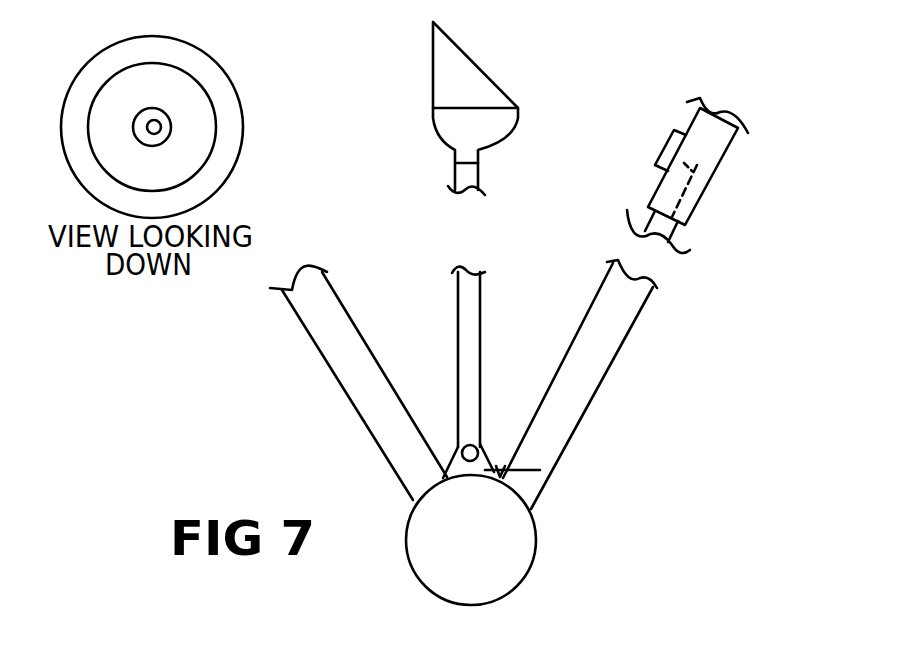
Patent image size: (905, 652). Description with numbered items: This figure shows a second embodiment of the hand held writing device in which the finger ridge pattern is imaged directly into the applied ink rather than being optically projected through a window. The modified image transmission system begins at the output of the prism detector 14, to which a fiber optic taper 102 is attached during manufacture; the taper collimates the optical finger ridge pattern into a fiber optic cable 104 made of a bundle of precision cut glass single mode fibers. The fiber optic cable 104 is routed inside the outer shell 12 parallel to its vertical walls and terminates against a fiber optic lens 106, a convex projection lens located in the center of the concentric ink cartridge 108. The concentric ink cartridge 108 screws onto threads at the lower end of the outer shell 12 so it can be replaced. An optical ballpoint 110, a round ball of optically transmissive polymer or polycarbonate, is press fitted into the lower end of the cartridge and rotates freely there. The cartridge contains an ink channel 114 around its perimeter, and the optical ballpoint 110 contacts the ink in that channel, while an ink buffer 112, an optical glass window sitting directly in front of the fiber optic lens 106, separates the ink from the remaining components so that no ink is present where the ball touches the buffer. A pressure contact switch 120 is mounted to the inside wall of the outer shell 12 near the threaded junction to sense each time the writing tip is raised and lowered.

The outer shell 12 is at (708, 190).
The prism detector 14 is at (500, 87).
The fiber optic taper 102 is at (500, 142).
The fiber optic cable 104 is at (147, 125).
The fiber optic lens 106 is at (478, 445).
The concentric ink cartridge 108 is at (277, 174).
The optical ballpoint 110 is at (537, 548).
The ink buffer 112 is at (142, 127).
The ink channel 114 is at (210, 78).
The pressure contact switch 120 is at (663, 150).